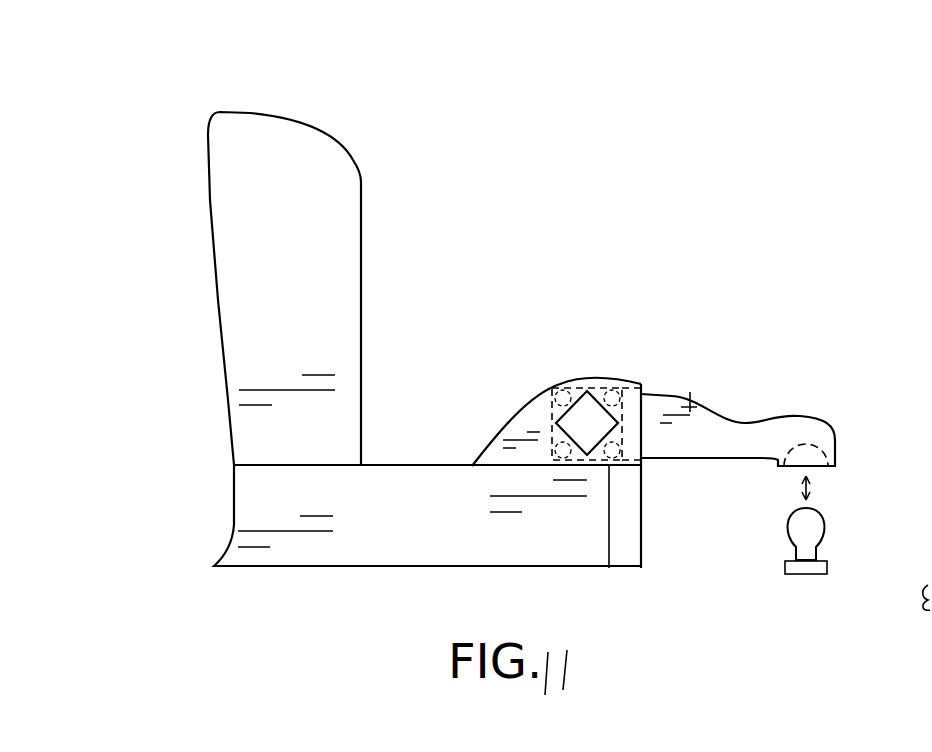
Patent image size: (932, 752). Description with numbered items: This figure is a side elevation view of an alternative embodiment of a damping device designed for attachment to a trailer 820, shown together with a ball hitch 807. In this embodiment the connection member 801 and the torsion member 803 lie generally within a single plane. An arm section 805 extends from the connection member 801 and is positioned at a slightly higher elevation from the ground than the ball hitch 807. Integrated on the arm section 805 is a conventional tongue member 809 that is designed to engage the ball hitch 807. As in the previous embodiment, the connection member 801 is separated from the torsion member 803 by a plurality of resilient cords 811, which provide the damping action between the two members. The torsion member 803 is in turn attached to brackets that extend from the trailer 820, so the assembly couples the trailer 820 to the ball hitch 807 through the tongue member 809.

The connection member 801 is at (691, 396).
The torsion member 803 is at (587, 390).
The arm section 805 is at (715, 445).
The ball hitch 807 is at (812, 531).
The tongue member 809 is at (857, 446).
The resilient cords 811 is at (562, 400).
The trailer 820 is at (298, 546).